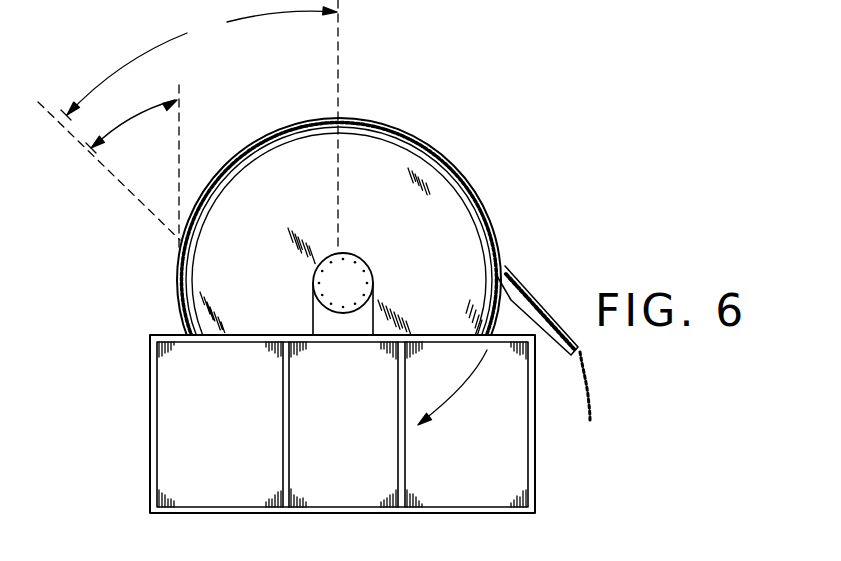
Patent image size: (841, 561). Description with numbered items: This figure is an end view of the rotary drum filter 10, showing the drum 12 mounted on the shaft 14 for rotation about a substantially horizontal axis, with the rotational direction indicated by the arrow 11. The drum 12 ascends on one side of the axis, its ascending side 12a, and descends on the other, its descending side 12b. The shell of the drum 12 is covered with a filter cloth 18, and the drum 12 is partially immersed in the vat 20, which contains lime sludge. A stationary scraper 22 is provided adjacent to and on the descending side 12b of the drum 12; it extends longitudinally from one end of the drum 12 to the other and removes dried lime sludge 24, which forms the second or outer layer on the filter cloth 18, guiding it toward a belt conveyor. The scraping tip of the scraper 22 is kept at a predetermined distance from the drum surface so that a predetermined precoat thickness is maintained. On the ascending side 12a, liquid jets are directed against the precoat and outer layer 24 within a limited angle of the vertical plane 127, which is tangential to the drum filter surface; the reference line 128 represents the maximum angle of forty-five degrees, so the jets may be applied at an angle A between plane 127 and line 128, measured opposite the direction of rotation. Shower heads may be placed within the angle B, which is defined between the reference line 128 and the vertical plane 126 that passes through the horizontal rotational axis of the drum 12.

The rotary drum filter 10 is at (437, 124).
The arrow 11 is at (462, 392).
The drum 12 is at (278, 251).
The ascending side 12a is at (162, 297).
The descending side 12b is at (538, 252).
The shaft 14 is at (368, 266).
The filter cloth 18 is at (240, 175).
The vat 20 is at (242, 416).
The scraper 22 is at (555, 341).
The lime sludge 24 is at (270, 136).
The vertical plane 126 is at (338, 33).
The vertical plane 127 is at (180, 127).
The reference line 128 is at (130, 193).
The angle A is at (120, 120).
The angle B is at (199, 63).